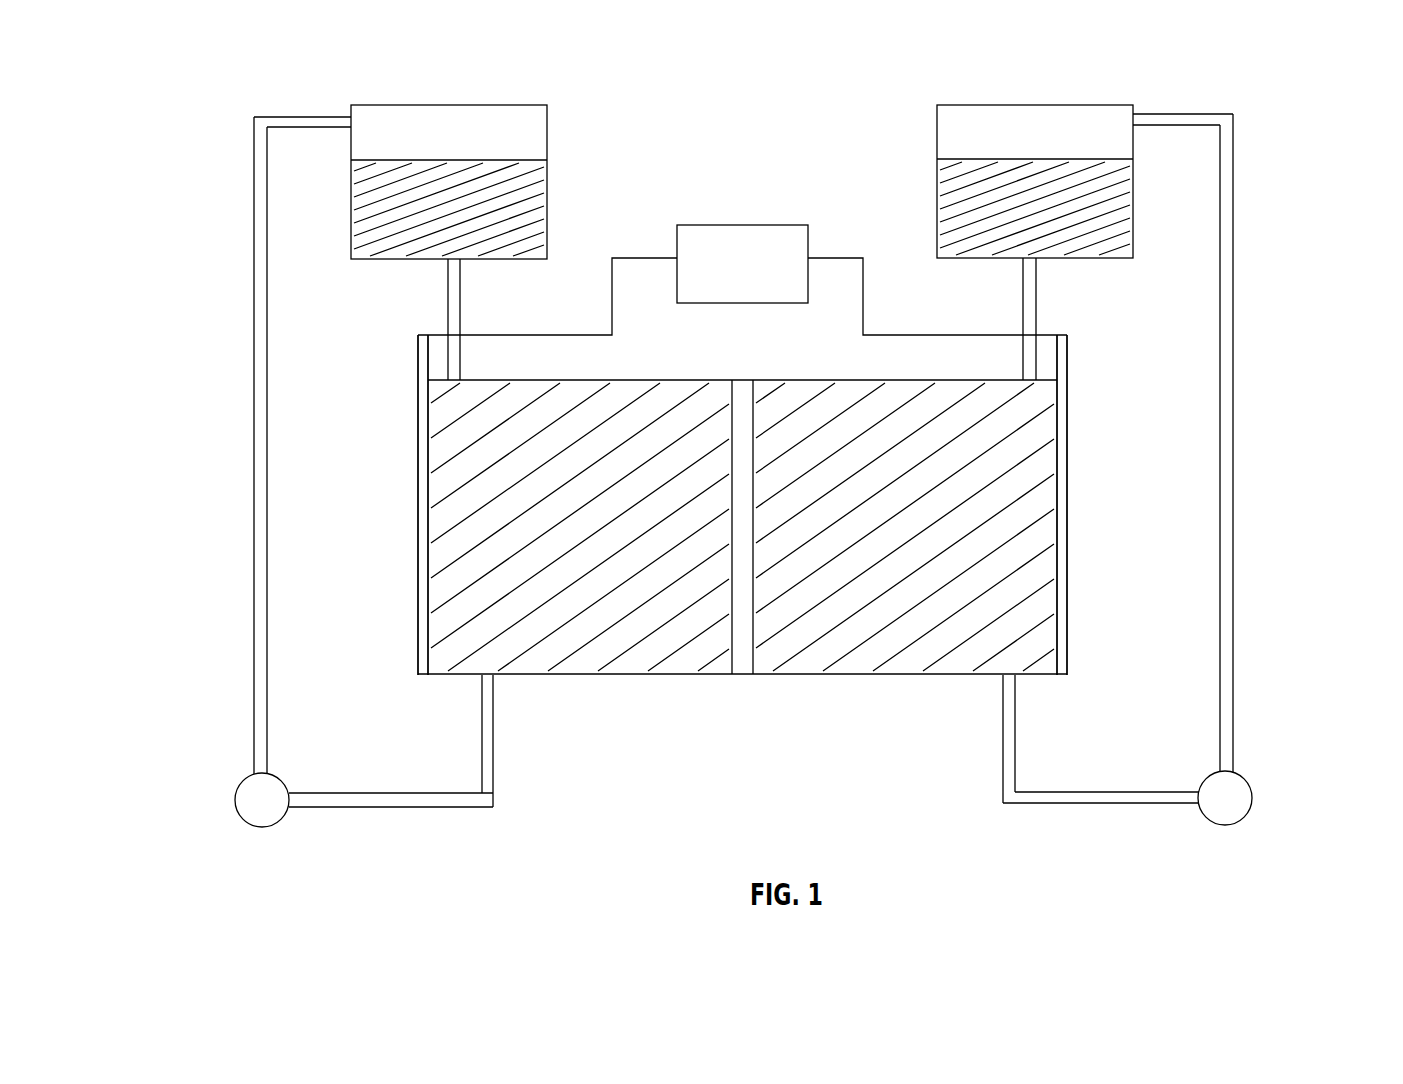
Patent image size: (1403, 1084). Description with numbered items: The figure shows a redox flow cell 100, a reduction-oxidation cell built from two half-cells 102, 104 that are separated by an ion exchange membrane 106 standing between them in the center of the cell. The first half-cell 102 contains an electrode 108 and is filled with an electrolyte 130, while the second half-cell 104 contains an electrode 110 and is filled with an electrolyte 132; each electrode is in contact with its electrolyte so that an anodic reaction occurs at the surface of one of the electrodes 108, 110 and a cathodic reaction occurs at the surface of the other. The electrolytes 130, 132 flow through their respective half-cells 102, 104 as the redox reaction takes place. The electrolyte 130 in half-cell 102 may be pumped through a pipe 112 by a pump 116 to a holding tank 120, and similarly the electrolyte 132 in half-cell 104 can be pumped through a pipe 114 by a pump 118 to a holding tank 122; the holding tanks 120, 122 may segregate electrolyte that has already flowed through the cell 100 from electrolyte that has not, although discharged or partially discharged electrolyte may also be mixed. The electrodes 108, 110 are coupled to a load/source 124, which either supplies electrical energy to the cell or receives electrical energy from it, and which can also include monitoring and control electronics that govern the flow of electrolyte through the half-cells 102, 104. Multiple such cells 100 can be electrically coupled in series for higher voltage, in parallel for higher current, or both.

The redox flow cell 100 is at (937, 674).
The half-cell 102 is at (663, 442).
The half-cell 104 is at (858, 442).
The ion exchange membrane 106 is at (753, 498).
The electrode 108 is at (418, 587).
The electrode 110 is at (1067, 600).
The pipe 112 is at (267, 471).
The pipe 114 is at (1233, 469).
The pump 116 is at (280, 820).
The pump 118 is at (1207, 818).
The holding tank 120 is at (547, 127).
The holding tank 122 is at (937, 127).
The load/source 124 is at (698, 225).
The electrolyte 130 is at (592, 640).
The electrolyte 132 is at (862, 640).